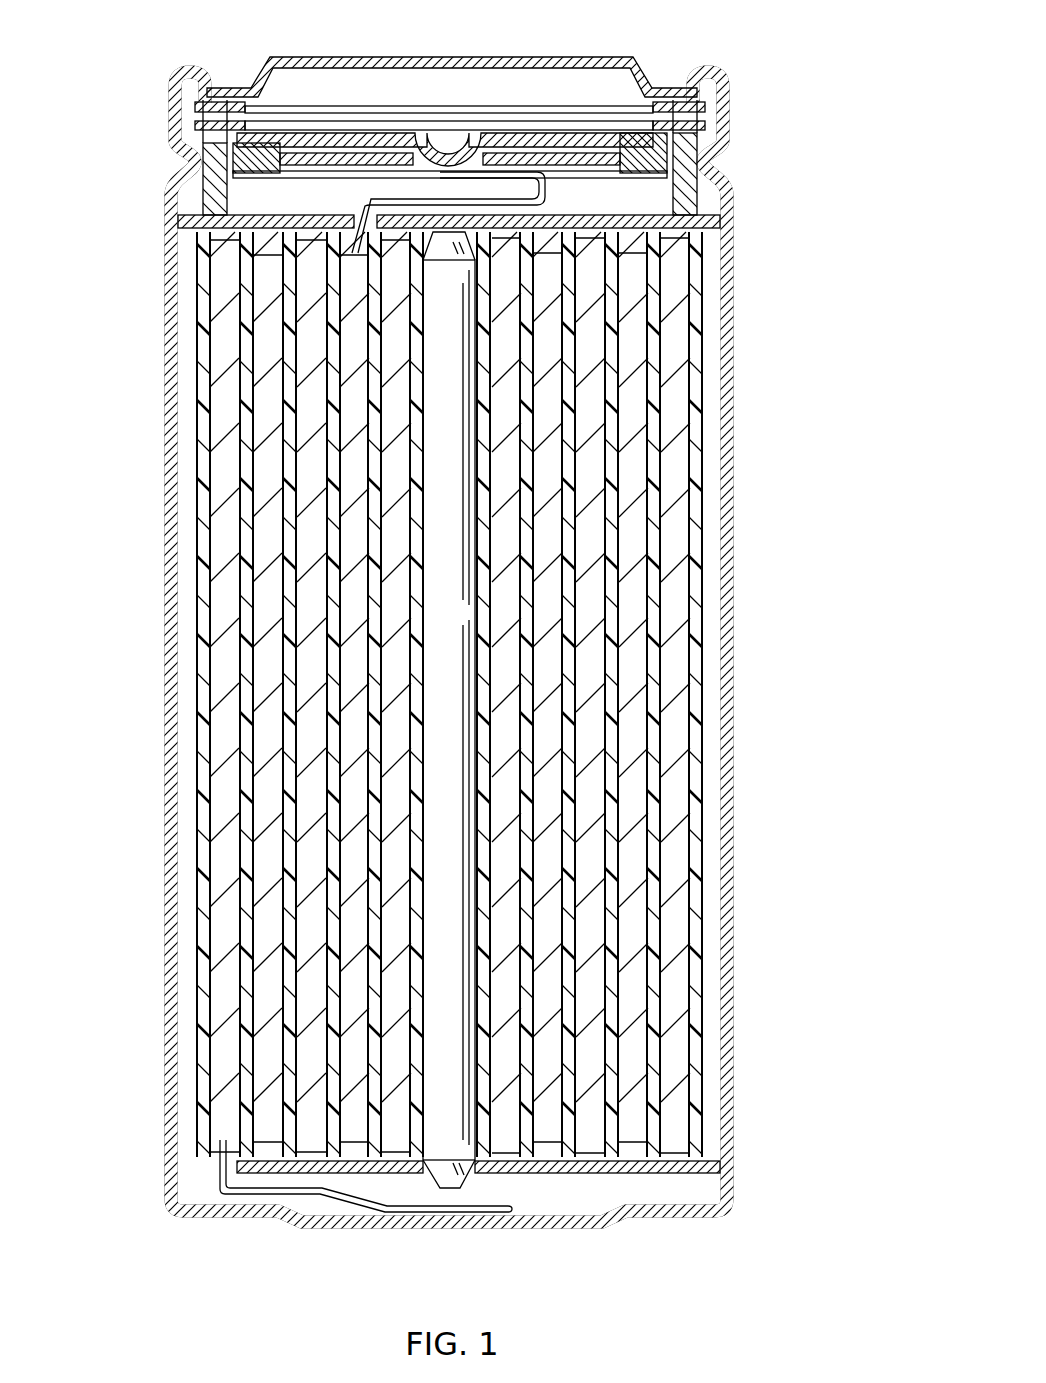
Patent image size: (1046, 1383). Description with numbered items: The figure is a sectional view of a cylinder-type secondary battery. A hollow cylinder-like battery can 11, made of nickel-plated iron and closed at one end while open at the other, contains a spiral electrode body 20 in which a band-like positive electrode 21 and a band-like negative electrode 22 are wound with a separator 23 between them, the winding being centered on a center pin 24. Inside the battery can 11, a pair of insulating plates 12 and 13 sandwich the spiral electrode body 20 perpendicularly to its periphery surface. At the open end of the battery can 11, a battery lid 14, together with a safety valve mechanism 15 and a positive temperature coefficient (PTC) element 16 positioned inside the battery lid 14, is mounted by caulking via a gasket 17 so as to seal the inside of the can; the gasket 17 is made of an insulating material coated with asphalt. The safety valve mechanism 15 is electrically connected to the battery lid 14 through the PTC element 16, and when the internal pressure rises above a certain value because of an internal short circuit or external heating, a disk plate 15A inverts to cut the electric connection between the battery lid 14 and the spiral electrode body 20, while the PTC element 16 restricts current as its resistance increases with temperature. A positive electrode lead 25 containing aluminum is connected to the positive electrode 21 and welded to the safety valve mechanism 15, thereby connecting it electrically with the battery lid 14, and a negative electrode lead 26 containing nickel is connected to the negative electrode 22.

The battery can 11 is at (732, 288).
The insulating plate 12 is at (722, 224).
The insulating plate 13 is at (716, 1166).
The battery lid 14 is at (415, 56).
The safety valve mechanism 15 is at (588, 126).
The disk plate 15A is at (541, 132).
The positive temperature coefficient (PTC) element 16 is at (732, 116).
The gasket 17 is at (730, 181).
The spiral electrode body 20 is at (703, 418).
The positive electrode 21 is at (637, 508).
The negative electrode 22 is at (680, 580).
The separator 23 is at (650, 658).
The center pin 24 is at (445, 706).
The positive electrode lead 25 is at (425, 172).
The negative electrode lead 26 is at (328, 1200).